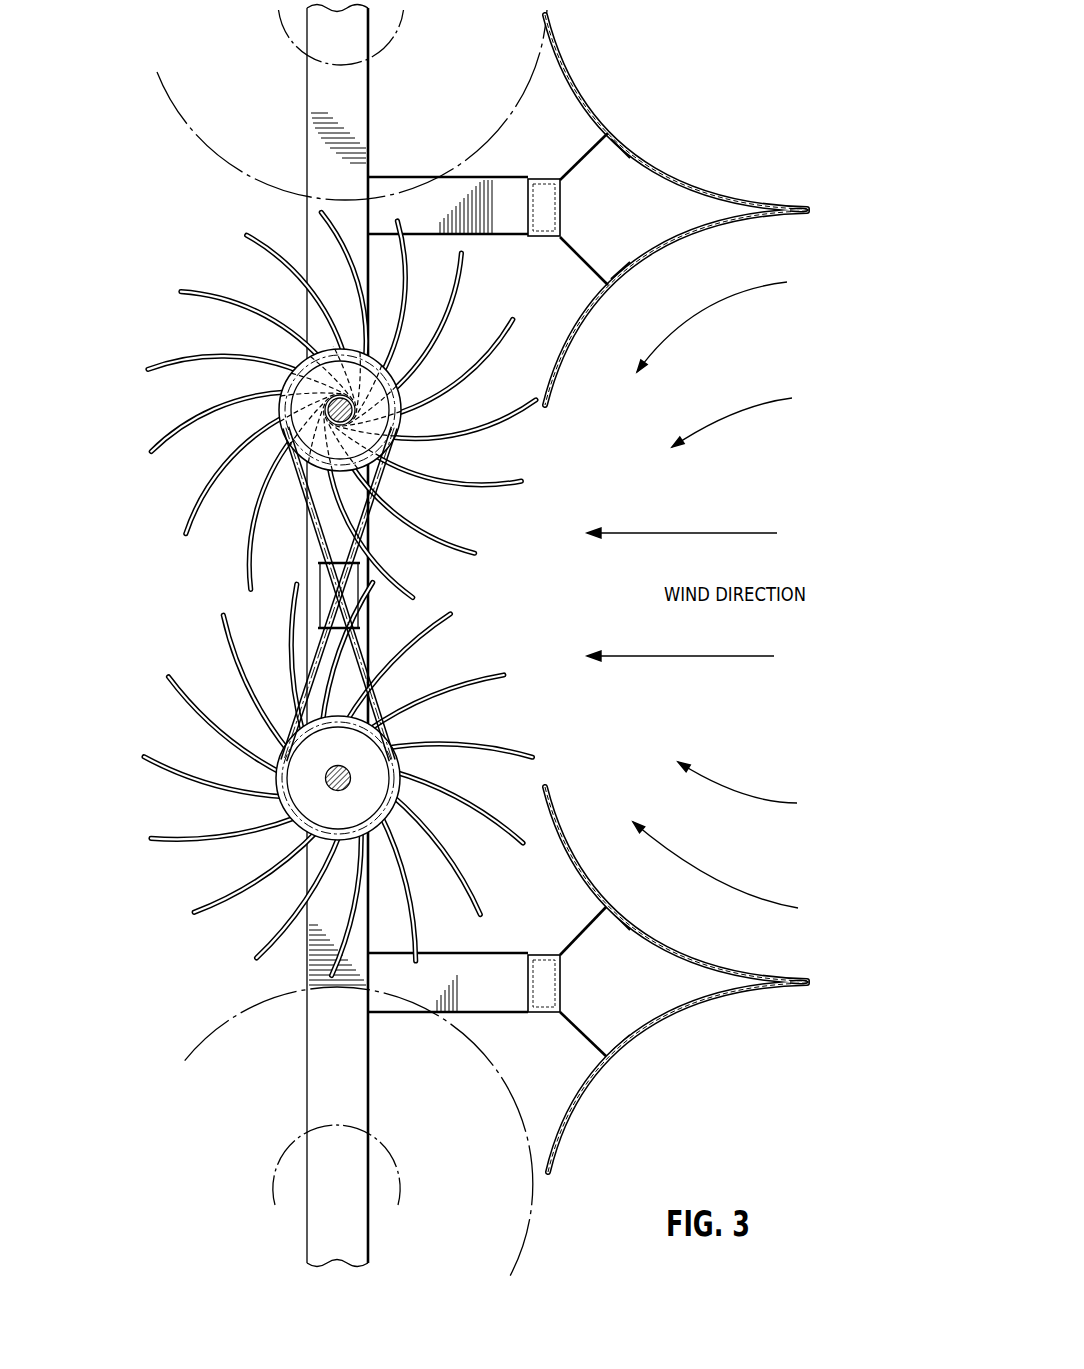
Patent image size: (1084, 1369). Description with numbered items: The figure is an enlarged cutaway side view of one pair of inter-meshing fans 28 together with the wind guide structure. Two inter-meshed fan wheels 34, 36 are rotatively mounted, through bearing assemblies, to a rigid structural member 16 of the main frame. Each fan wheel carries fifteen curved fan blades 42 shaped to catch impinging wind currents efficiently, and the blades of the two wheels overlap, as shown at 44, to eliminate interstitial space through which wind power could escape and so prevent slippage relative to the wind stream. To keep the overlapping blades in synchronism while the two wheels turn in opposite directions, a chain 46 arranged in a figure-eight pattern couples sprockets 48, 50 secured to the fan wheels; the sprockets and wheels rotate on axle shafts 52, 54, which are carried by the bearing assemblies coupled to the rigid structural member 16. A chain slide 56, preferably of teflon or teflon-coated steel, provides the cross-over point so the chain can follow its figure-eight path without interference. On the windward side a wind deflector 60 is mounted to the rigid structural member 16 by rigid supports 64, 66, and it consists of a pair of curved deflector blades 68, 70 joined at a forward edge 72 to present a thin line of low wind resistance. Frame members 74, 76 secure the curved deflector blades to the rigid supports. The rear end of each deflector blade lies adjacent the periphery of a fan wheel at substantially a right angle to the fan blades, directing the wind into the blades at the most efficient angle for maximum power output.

The rigid structural member 16 is at (307, 78).
The pair of inter-meshing fans 28 is at (298, 593).
The fan wheel 34 is at (186, 331).
The fan wheel 36 is at (129, 822).
The curved fan blades 42 is at (196, 366).
The overlap of fan blades 44 is at (309, 594).
The chain 46 is at (318, 534).
The sprocket 48 is at (377, 467).
The sprocket 50 is at (376, 748).
The axle shaft 52 is at (392, 396).
The axle shaft 54 is at (344, 765).
The chain slide 56 is at (358, 612).
The wind deflector 60 is at (672, 536).
The rigid support 64 is at (504, 178).
The rigid support 66 is at (463, 996).
The curved deflector blade 68 is at (580, 92).
The curved deflector blade 70 is at (655, 938).
The forward edge 72 is at (808, 204).
The frame member 74 is at (586, 156).
The frame member 76 is at (580, 258).